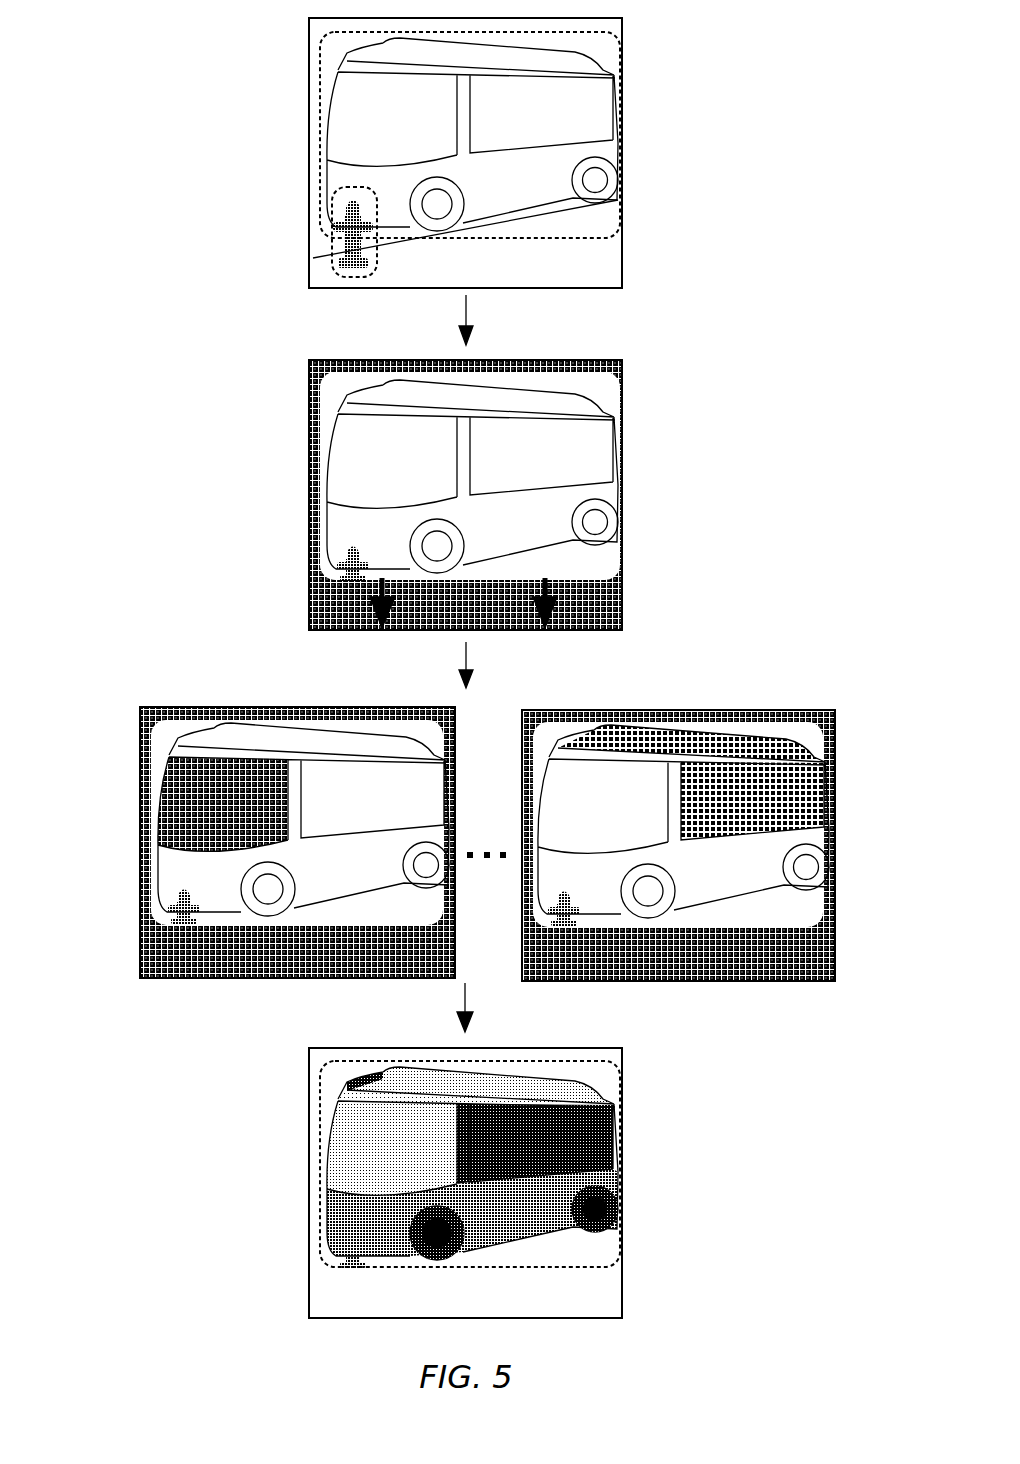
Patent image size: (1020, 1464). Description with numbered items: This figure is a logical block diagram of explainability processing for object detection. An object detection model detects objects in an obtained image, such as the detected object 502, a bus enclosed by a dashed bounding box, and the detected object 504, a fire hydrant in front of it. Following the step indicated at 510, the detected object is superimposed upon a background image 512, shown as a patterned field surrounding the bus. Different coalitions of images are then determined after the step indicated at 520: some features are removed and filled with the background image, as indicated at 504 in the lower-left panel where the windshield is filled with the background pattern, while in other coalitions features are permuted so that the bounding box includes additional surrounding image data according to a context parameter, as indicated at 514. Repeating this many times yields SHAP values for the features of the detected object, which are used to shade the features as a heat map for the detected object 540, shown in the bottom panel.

The detected object 502 is at (320, 80).
The detected object 504 is at (328, 258).
The superimposition step 510 is at (463, 318).
The background image 512 is at (309, 607).
The surrounding image data inclusion 514 is at (555, 628).
The coalition generation step 520 is at (463, 662).
The heat map for detected object 540 is at (320, 1113).